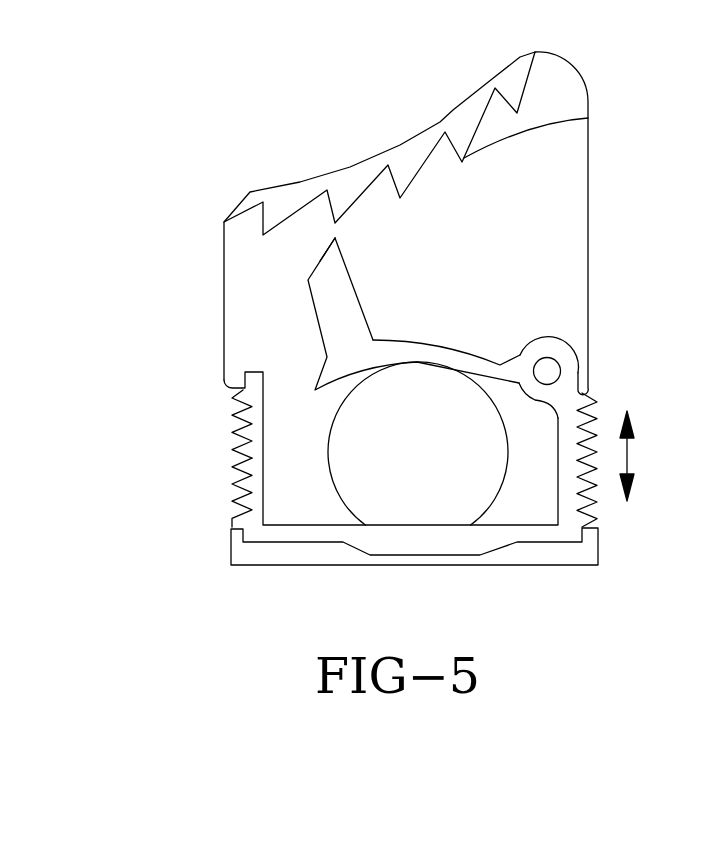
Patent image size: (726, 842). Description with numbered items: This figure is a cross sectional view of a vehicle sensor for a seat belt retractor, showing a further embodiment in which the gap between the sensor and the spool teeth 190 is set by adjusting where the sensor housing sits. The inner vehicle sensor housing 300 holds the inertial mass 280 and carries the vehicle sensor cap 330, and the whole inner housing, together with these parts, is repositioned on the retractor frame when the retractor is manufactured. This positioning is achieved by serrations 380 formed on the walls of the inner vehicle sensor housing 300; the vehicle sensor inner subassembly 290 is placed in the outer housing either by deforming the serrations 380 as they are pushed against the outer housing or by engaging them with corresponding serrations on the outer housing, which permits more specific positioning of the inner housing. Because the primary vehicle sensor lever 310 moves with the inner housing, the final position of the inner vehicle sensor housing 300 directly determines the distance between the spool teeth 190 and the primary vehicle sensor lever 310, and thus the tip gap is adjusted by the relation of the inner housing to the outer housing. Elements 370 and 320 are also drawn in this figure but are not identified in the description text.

The spool teeth 190 is at (588, 118).
The pawl tip 370 is at (330, 250).
The primary vehicle sensor lever 310 is at (323, 308).
The vehicle sensor cap 330 is at (463, 350).
The pivot 320 is at (548, 370).
The inner vehicle sensor housing 300 is at (256, 403).
The serrations 380 is at (240, 476).
The vehicle sensor inner subassembly 290 is at (267, 533).
The inertial mass 280 is at (425, 508).